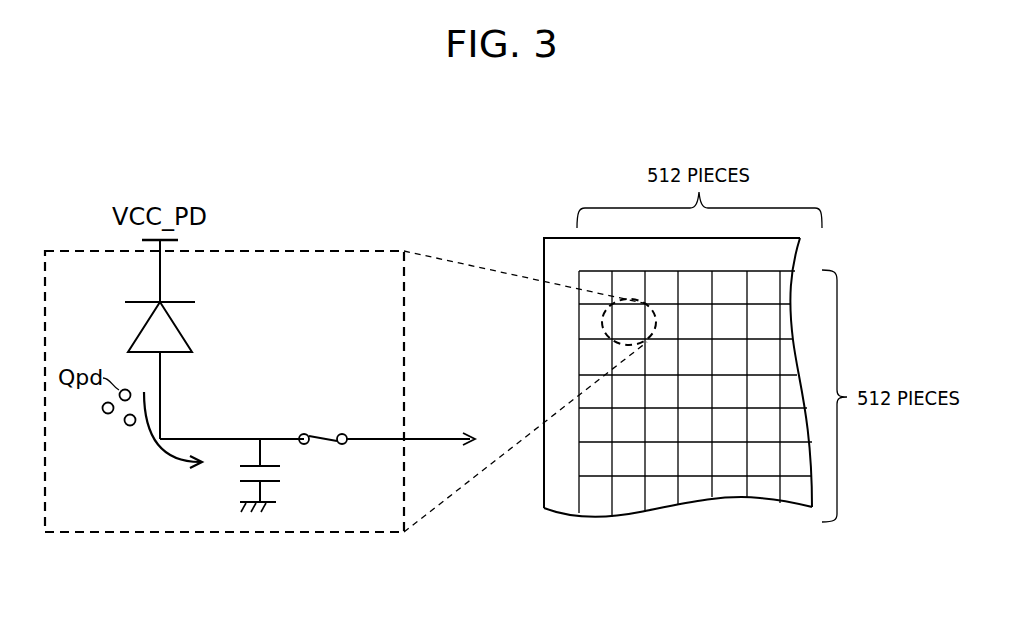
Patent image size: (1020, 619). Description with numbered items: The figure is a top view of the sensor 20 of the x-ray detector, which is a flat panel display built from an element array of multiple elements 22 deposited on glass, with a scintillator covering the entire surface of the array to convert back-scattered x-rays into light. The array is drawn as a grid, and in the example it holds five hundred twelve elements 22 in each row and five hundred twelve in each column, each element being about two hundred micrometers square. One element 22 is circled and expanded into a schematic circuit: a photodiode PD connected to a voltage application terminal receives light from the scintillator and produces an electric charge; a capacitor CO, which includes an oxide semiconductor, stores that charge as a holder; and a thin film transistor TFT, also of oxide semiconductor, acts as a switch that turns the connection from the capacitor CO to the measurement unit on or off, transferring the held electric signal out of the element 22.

The sensor 20 is at (535, 233).
The element 22 is at (622, 322).
The photodiode PD is at (182, 338).
The thin film transistor TFT is at (322, 430).
The capacitor CO is at (238, 473).